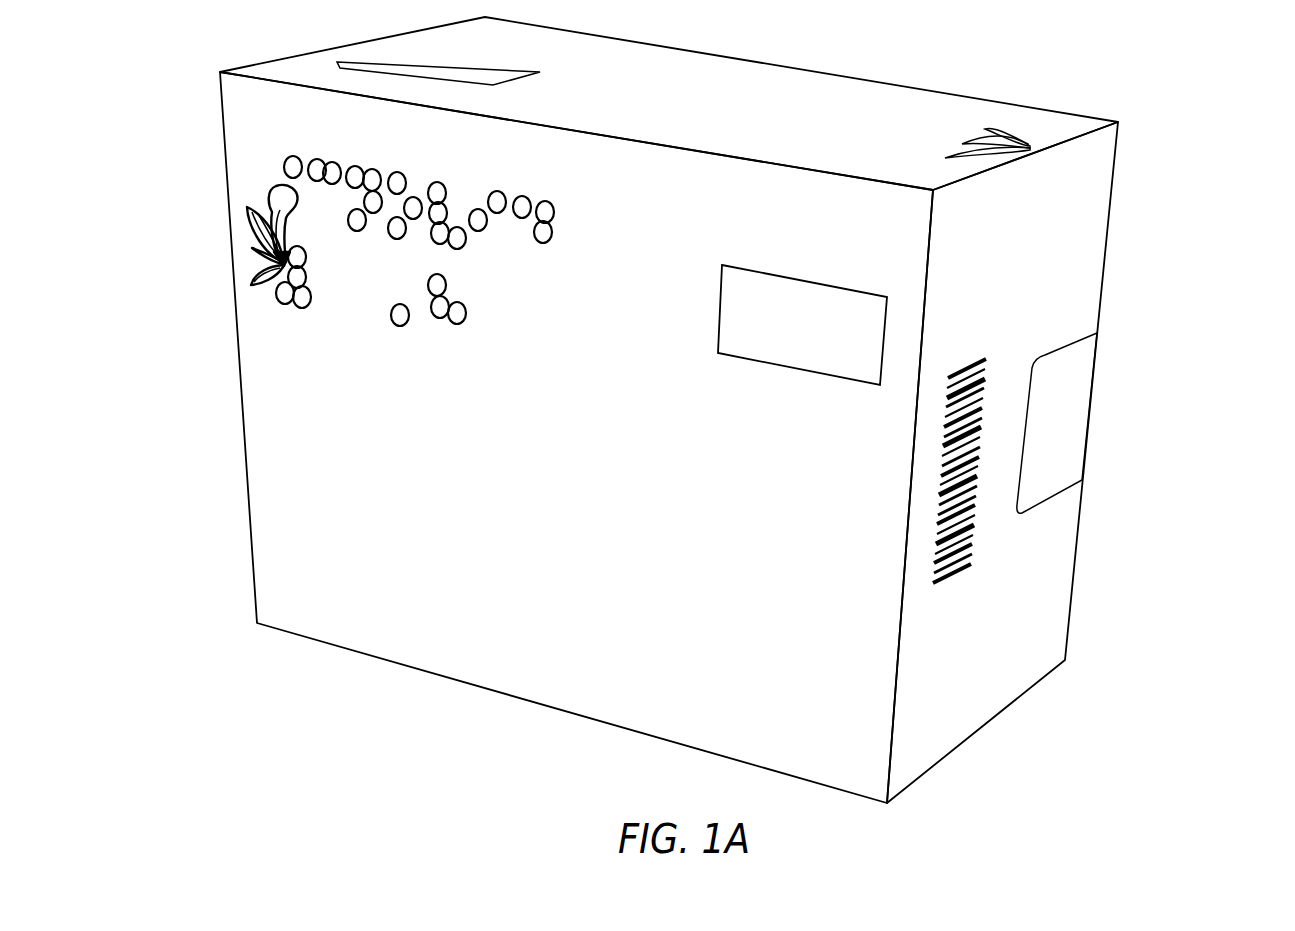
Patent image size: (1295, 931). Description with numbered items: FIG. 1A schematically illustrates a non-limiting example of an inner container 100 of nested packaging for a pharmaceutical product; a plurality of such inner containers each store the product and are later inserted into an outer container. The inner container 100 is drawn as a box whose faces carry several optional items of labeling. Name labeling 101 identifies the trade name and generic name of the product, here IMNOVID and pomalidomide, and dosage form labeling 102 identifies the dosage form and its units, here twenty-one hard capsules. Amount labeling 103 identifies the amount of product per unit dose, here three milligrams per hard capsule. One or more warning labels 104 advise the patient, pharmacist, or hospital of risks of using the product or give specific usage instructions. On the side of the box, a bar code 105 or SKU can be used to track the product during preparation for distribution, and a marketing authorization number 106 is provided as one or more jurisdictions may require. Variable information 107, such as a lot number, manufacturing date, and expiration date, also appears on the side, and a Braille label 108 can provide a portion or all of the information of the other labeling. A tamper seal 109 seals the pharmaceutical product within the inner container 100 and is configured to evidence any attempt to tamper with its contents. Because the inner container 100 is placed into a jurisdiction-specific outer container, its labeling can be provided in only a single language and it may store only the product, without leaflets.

The inner container 100 is at (702, 410).
The name labeling 101 is at (298, 228).
The dosage form labeling 102 is at (233, 120).
The amount labeling 103 is at (882, 320).
The warning label 104 is at (567, 692).
The bar code 105 is at (938, 497).
The marketing authorization number 106 is at (919, 744).
The variable information 107 is at (1043, 384).
The Braille label 108 is at (528, 202).
The tamper seal 109 is at (1068, 423).